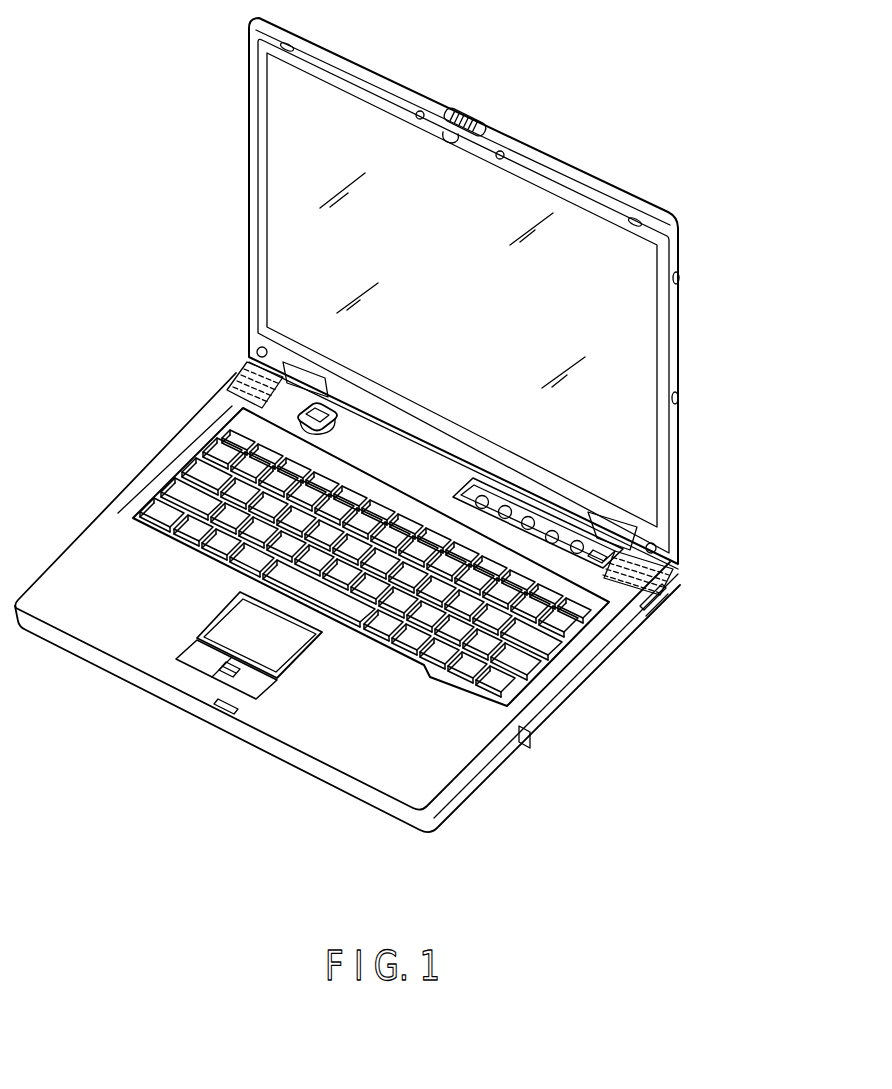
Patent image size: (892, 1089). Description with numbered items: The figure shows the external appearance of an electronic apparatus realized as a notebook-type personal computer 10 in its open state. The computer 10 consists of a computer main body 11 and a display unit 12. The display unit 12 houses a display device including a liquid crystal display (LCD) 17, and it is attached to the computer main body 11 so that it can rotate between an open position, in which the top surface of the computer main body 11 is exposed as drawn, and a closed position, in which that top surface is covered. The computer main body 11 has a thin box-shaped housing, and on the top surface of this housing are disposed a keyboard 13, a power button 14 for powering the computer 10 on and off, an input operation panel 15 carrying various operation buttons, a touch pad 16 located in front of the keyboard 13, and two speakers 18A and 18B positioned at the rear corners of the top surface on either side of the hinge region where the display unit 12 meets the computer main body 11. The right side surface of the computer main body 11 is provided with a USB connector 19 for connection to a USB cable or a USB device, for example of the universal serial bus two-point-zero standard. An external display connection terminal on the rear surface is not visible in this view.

The notebook-type personal computer 10 is at (668, 723).
The computer main body 11 is at (468, 795).
The display unit 12 is at (676, 425).
The keyboard 13 is at (540, 660).
The power button 14 is at (300, 409).
The input operation panel 15 is at (573, 530).
The touch pad 16 is at (200, 654).
The liquid crystal display (LCD) 17 is at (646, 312).
The speaker 18A is at (246, 366).
The speaker 18B is at (668, 564).
The USB connector 19 is at (665, 597).